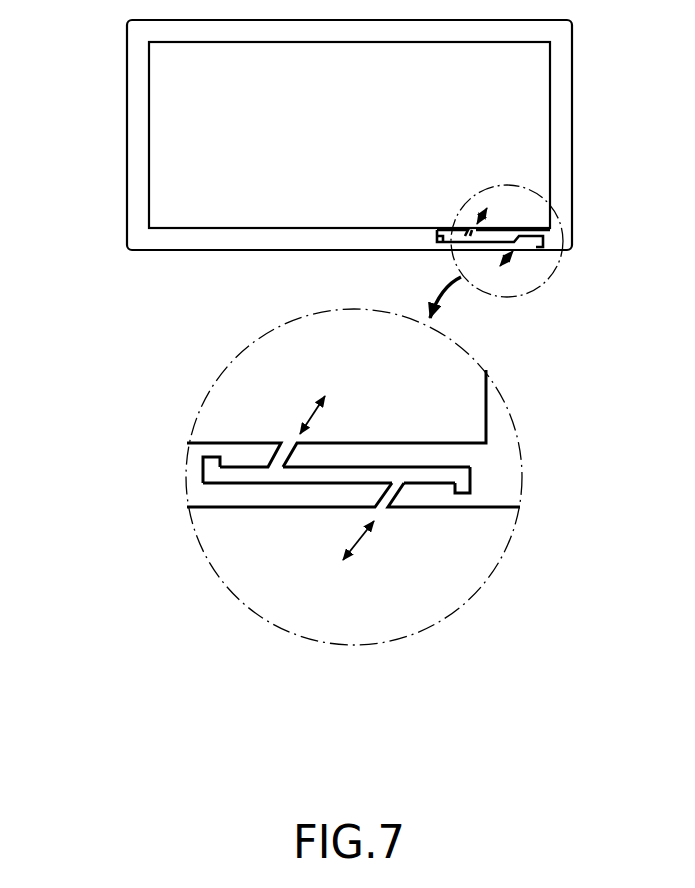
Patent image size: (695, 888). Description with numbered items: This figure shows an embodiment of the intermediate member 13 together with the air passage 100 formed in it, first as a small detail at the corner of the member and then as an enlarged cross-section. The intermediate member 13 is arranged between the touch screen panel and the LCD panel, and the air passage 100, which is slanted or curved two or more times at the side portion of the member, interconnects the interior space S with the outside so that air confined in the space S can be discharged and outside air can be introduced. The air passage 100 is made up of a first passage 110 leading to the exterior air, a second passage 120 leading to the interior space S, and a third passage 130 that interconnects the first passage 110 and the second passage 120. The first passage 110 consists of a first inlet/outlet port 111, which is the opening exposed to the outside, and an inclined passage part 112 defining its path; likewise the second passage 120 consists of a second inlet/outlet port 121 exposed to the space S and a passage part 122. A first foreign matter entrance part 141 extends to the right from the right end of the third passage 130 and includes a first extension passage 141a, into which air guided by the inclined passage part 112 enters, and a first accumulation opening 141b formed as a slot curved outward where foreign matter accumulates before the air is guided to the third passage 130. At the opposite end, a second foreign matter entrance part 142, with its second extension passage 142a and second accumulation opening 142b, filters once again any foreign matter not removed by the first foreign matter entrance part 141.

The intermediate member 13 is at (563, 70).
The interior space S is at (508, 121).
The air passage 100 is at (530, 258).
The first passage 110 is at (353, 613).
The first inlet/outlet port 111 is at (387, 497).
The passage part 112 is at (394, 488).
The second passage 120 is at (276, 418).
The second inlet/outlet port 121 is at (290, 441).
The passage part 122 is at (272, 442).
The third passage 130 is at (308, 473).
The first foreign matter entrance part 141 is at (529, 516).
The first extension passage 141a is at (432, 485).
The first accumulation opening 141b is at (463, 486).
The second foreign matter entrance part 142 is at (212, 509).
The second extension passage 142a is at (240, 484).
The second accumulation opening 142b is at (201, 470).